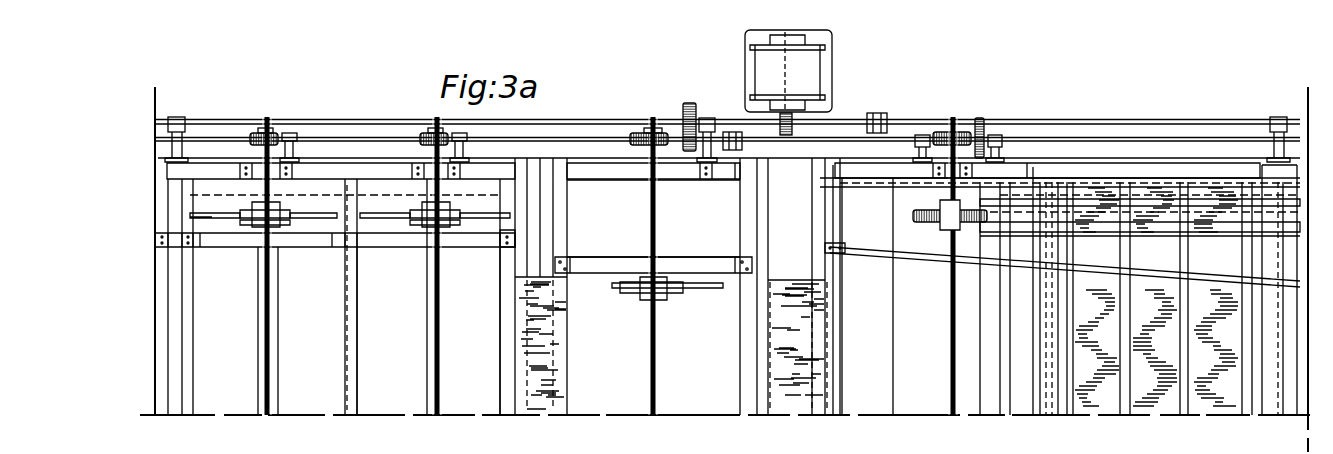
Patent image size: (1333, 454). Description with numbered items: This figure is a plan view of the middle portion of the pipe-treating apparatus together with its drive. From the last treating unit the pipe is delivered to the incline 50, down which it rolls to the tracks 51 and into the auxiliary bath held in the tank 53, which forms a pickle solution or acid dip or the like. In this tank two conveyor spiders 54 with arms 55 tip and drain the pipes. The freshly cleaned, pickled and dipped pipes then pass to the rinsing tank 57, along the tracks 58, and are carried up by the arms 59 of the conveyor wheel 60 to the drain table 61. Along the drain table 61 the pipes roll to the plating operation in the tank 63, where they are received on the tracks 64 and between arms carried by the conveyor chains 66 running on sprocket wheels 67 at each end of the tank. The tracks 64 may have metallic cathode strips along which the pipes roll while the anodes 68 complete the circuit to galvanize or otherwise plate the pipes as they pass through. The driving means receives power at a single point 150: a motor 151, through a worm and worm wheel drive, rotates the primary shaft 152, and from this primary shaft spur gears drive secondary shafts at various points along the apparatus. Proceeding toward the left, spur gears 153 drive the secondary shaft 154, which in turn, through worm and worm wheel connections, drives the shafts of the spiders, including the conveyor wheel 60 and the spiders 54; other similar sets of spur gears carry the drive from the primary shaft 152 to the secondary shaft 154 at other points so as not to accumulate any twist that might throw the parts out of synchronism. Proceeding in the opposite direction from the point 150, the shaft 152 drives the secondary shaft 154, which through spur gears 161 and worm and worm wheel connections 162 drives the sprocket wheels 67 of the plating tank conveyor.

The incline 50 is at (163, 240).
The tracks 51 is at (190, 236).
The tank 53 is at (365, 170).
The conveyor spiders 54 is at (250, 212).
The arms 55 is at (298, 220).
The rinsing tank 57 is at (745, 212).
The tracks 58 is at (627, 286).
The arms 59 is at (616, 288).
The conveyor wheel 60 is at (648, 302).
The drain table 61 is at (800, 334).
The tank 63 is at (830, 238).
The tracks 64 is at (921, 255).
The conveyor chains 66 is at (1018, 206).
The sprocket wheels 67 is at (912, 216).
The anodes 68 is at (905, 358).
The single point 150 is at (891, 74).
The motor 151 is at (800, 72).
The primary shaft 152 is at (290, 120).
The spur gears 153 is at (690, 110).
The secondary shaft 154 is at (580, 138).
The spur gears 161 is at (985, 122).
The worm and worm wheel connections 162 is at (963, 132).